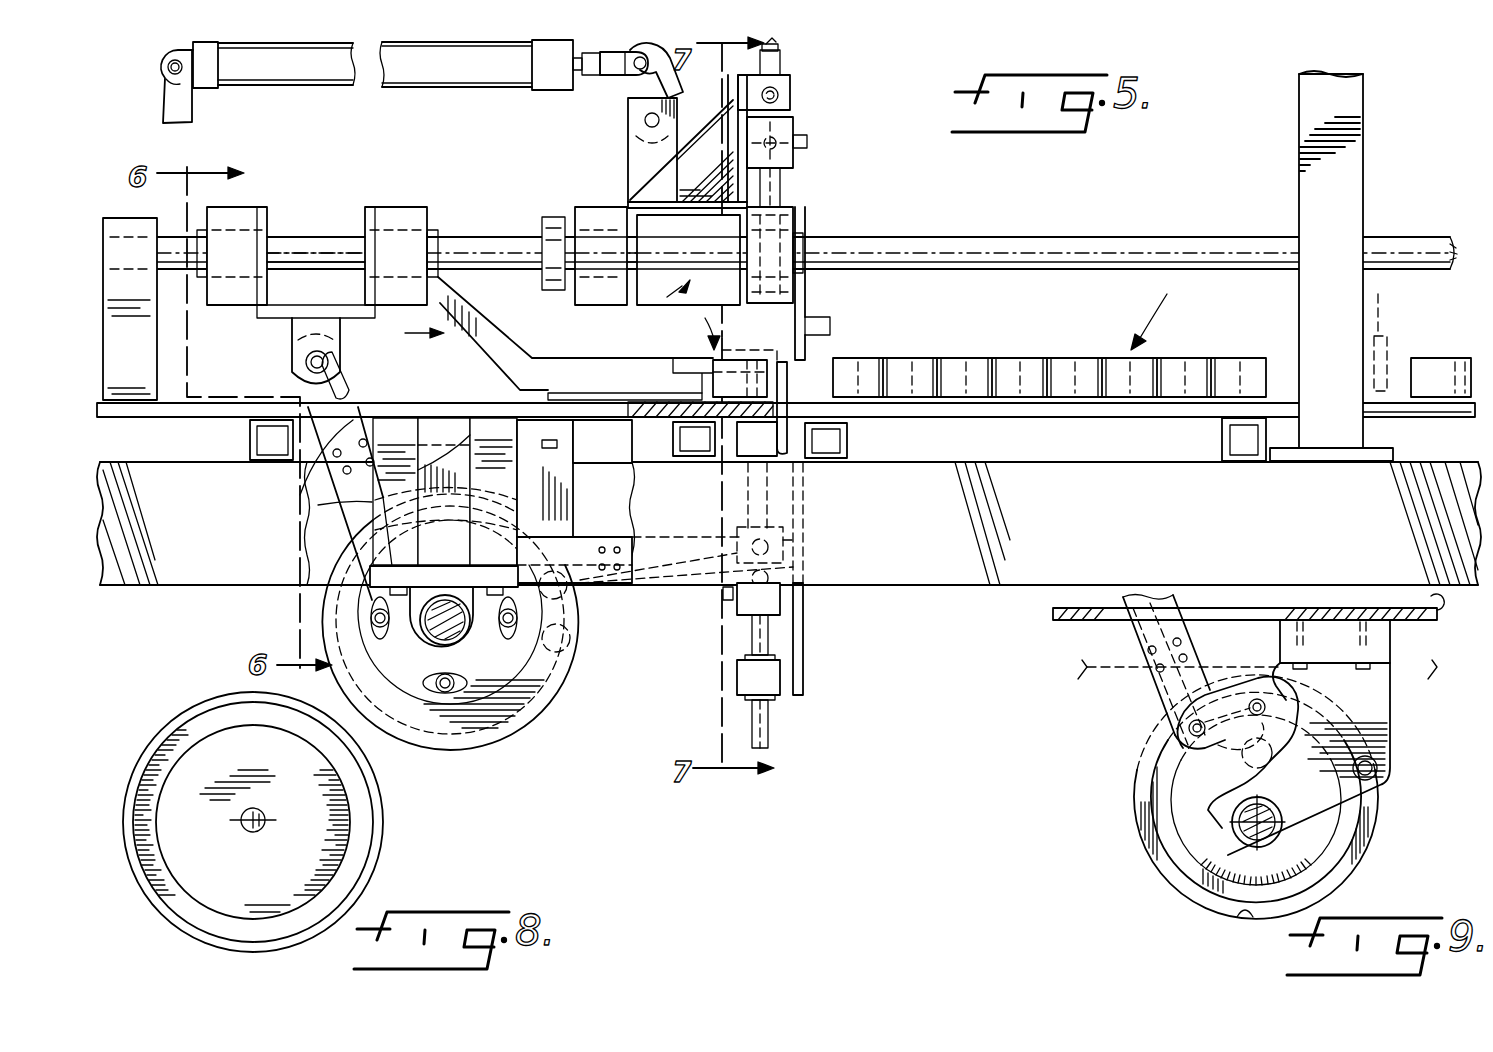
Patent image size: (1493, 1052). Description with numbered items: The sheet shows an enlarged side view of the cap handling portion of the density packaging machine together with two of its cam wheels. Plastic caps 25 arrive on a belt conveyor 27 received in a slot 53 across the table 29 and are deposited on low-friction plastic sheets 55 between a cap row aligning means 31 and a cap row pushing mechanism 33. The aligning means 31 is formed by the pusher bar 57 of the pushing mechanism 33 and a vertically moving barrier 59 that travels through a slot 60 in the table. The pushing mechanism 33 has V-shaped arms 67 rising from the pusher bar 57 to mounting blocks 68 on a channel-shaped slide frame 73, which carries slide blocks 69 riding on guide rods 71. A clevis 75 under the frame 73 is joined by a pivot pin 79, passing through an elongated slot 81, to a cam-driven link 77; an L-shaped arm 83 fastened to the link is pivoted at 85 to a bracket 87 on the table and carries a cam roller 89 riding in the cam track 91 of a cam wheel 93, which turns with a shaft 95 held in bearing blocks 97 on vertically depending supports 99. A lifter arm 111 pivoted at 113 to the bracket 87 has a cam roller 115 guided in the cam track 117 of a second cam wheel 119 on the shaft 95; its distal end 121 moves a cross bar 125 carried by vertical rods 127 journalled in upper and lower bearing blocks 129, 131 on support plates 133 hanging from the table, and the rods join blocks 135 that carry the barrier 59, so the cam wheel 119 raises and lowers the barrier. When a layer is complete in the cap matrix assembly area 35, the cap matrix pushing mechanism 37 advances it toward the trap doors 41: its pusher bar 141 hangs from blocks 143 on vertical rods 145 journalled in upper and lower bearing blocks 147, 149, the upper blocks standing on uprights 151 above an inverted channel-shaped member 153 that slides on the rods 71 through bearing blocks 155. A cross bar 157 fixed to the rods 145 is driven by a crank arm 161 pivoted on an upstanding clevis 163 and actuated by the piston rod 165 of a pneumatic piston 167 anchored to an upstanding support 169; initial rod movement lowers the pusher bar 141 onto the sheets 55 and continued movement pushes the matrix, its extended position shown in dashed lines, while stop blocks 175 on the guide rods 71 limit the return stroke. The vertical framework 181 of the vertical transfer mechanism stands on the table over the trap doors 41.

In FIG. 5, the plastic caps 25 is at (745, 362).
In FIG. 5, the belt conveyor 27 is at (677, 428).
In FIG. 5, the table 29 is at (1079, 412).
In FIG. 9, the table 29 is at (1072, 622).
In FIG. 5, the cap row aligning means 31 is at (701, 325).
In FIG. 5, the cap row pushing mechanism 33 is at (408, 338).
In FIG. 5, the cap matrix assembly area 35 is at (1165, 319).
In FIG. 5, the cap matrix pushing mechanism 37 is at (661, 300).
In FIG. 5, the trap doors 41 is at (1464, 414).
In FIG. 5, the slot 53 is at (737, 430).
In FIG. 5, the plastic sheets 55 is at (590, 396).
In FIG. 9, the plastic sheets 55 is at (1425, 622).
In FIG. 5, the pusher bar 57 is at (713, 363).
In FIG. 5, the vertically moving barrier 59 is at (785, 375).
In FIG. 5, the slot 60 is at (787, 415).
In FIG. 5, the V-shaped arms 67 is at (475, 313).
In FIG. 5, the mounting blocks 68 is at (405, 253).
In FIG. 5, the slide blocks 69 is at (392, 207).
In FIG. 5, the guide rods 71 is at (1182, 239).
In FIG. 5, the slide frame 73 is at (270, 222).
In FIG. 5, the clevis 75 is at (302, 332).
In FIG. 5, the cam-driven link 77 is at (322, 447).
In FIG. 9, the cam-driven link 77 is at (1143, 630).
In FIG. 5, the pivot pin 79 is at (306, 364).
In FIG. 5, the elongated slot 81 is at (346, 377).
In FIG. 5, the L-shaped arm 83 is at (360, 493).
In FIG. 9, the L-shaped arm 83 is at (1167, 697).
In FIG. 9, the pivot 85 is at (1189, 732).
In FIG. 5, the bracket 87 is at (572, 495).
In FIG. 9, the bracket 87 is at (1378, 700).
In FIG. 9, the cam roller 89 is at (1263, 697).
In FIG. 9, the cam track 91 is at (1240, 912).
In FIG. 9, the cam wheel 93 is at (1157, 870).
In FIG. 5, the shaft 95 is at (440, 642).
In FIG. 9, the shaft 95 is at (1243, 847).
In FIG. 5, the bearing blocks 97 is at (458, 642).
In FIG. 5, the vertically depending supports 99 is at (480, 420).
In FIG. 5, the lifter arm 111 is at (582, 540).
In FIG. 5, the pivot 113 is at (580, 598).
In FIG. 9, the pivot 113 is at (1372, 770).
In FIG. 5, the cam roller 115 is at (577, 650).
In FIG. 5, the cam track 117 is at (502, 748).
In FIG. 8, the cam track 117 is at (347, 887).
In FIG. 5, the cam wheel 119 is at (450, 753).
In FIG. 8, the cam wheel 119 is at (185, 933).
In FIG. 5, the distal end 121 is at (807, 520).
In FIG. 5, the cross bar 125 is at (750, 603).
In FIG. 5, the vertically extending rods 127 is at (768, 733).
In FIG. 5, the upper bearing blocks 129 is at (797, 540).
In FIG. 5, the lower bearing blocks 131 is at (780, 686).
In FIG. 5, the support plates 133 is at (803, 648).
In FIG. 5, the blocks 135 is at (750, 445).
In FIG. 5, the pusher bar 141 is at (832, 330).
In FIG. 5, the blocks 143 is at (803, 305).
In FIG. 5, the vertically extending rods 145 is at (777, 190).
In FIG. 5, the upper bearing blocks 147 is at (790, 90).
In FIG. 5, the lower bearing blocks 149 is at (803, 223).
In FIG. 5, the uprights 151 is at (733, 162).
In FIG. 5, the inverted channel-shaped member 153 is at (708, 205).
In FIG. 5, the bearing blocks 155 is at (587, 215).
In FIG. 5, the cross bar 157 is at (793, 117).
In FIG. 5, the crank arm 161 is at (628, 90).
In FIG. 5, the upstanding clevis 163 is at (633, 150).
In FIG. 5, the piston rod 165 is at (596, 78).
In FIG. 5, the pneumatic piston 167 is at (493, 72).
In FIG. 5, the upstanding support 169 is at (172, 99).
In FIG. 5, the stop blocks 175 is at (543, 227).
In FIG. 5, the vertical framework 181 is at (1352, 148).